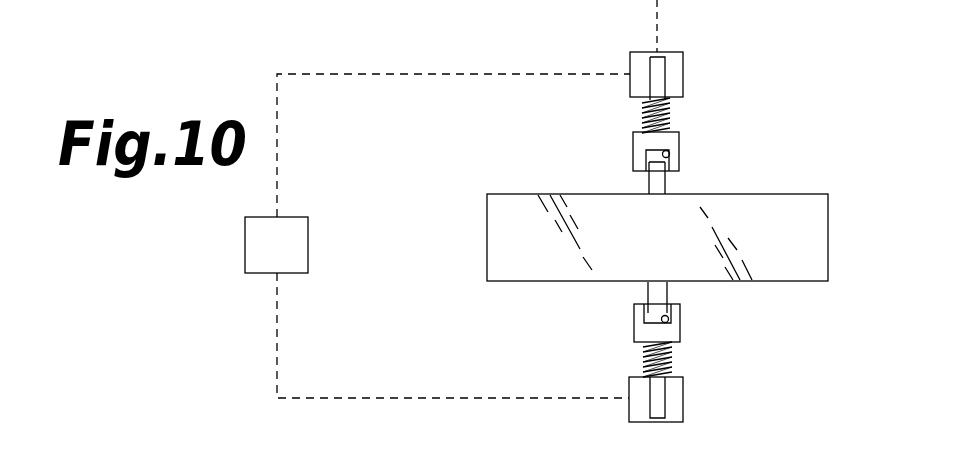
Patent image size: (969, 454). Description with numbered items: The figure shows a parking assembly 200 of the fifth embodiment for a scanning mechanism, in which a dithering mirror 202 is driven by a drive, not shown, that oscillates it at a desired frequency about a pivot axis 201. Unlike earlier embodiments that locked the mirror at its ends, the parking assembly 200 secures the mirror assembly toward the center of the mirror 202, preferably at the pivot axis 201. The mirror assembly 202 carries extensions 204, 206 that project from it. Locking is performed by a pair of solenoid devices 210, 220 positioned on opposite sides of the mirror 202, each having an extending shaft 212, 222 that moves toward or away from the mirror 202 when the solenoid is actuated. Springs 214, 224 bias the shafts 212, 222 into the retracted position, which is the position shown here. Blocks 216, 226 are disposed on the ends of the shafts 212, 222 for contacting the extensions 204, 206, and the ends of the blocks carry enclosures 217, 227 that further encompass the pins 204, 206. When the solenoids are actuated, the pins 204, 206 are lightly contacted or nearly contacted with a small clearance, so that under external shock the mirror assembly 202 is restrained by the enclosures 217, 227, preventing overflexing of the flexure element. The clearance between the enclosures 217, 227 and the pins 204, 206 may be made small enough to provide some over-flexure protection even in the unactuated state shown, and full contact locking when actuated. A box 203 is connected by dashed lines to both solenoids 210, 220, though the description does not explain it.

The parking assembly 200 is at (574, 42).
The pivot axis 201 is at (657, 8).
The dithering mirror 202 is at (779, 193).
The controller 203 is at (245, 249).
The extension 204 is at (658, 295).
The extension 206 is at (658, 182).
The solenoid device 210 is at (628, 414).
The extending shaft 212 is at (657, 405).
The spring 214 is at (643, 353).
The block 216 is at (681, 339).
The enclosure 217 is at (668, 317).
The solenoid device 220 is at (684, 55).
The extending shaft 222 is at (655, 80).
The spring 224 is at (645, 115).
The block 226 is at (680, 137).
The enclosure 227 is at (668, 157).